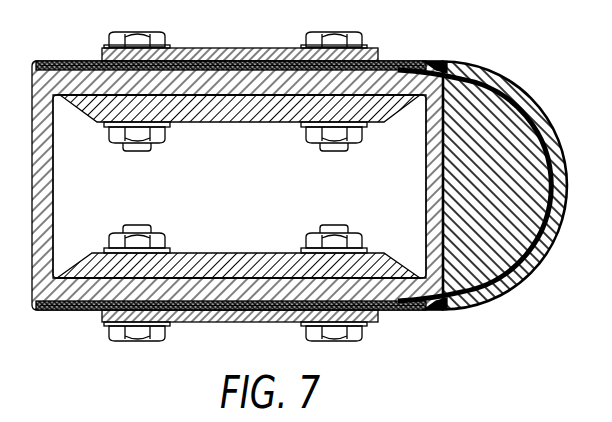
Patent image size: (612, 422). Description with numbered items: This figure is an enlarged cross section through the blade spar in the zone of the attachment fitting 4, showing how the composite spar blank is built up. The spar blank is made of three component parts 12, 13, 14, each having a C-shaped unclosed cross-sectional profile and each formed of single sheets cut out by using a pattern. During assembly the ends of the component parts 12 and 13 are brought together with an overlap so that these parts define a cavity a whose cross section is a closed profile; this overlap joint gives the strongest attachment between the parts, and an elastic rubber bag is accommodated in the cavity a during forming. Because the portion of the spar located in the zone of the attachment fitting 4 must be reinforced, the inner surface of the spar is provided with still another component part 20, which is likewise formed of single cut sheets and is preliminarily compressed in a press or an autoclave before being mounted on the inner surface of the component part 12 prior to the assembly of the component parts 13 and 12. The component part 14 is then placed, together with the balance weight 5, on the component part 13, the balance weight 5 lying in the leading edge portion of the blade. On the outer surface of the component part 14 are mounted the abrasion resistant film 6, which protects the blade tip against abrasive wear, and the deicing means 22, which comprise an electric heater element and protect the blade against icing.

The component part 12 is at (235, 88).
The component part 13 is at (204, 68).
The component part 14 is at (241, 67).
The attachment fitting 4 is at (277, 53).
The component part 20 is at (205, 117).
The balance weight 5 is at (519, 100).
The deicing means 22 is at (486, 76).
The abrasion resistant film 6 is at (440, 63).
The cavity a is at (63, 125).